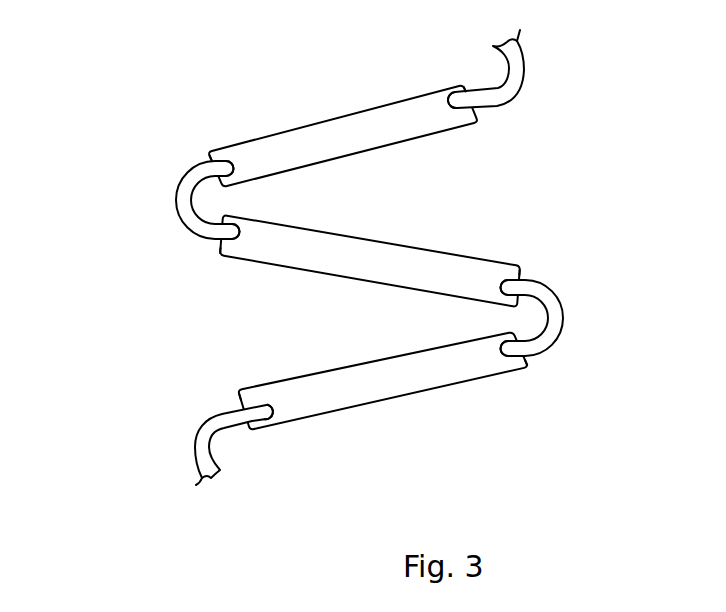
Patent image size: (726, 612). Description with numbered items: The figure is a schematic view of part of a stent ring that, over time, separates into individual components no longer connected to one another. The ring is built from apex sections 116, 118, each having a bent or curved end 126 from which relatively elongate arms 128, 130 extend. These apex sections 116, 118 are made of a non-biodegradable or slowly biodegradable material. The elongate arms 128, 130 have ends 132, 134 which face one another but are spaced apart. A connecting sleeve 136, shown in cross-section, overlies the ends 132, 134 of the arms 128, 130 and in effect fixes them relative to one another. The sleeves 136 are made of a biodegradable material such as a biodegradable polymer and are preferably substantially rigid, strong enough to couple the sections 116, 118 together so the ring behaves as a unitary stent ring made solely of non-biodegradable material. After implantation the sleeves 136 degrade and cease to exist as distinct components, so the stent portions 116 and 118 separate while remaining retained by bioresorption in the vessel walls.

The apex section 116 is at (163, 183).
The apex section 118 is at (556, 72).
The bent or curved end 126 is at (374, 271).
The elongate arm 128 is at (216, 171).
The elongate arm 130 is at (474, 120).
The end of arm 132 is at (222, 152).
The end of arm 134 is at (450, 106).
The connecting sleeve 136 is at (348, 142).